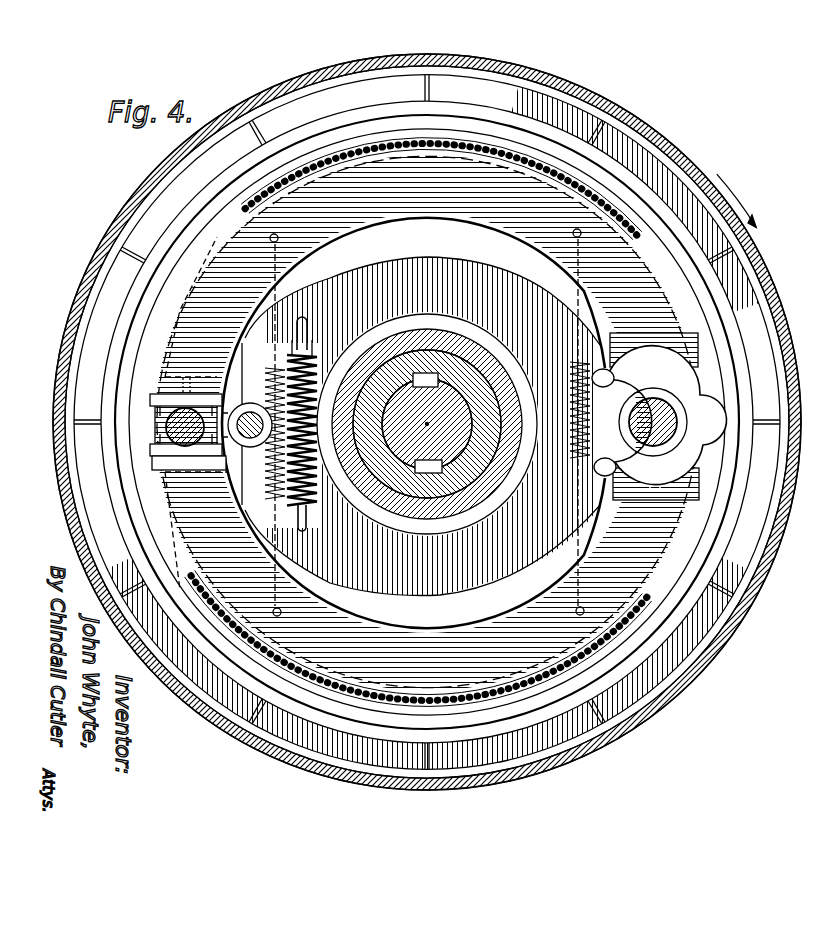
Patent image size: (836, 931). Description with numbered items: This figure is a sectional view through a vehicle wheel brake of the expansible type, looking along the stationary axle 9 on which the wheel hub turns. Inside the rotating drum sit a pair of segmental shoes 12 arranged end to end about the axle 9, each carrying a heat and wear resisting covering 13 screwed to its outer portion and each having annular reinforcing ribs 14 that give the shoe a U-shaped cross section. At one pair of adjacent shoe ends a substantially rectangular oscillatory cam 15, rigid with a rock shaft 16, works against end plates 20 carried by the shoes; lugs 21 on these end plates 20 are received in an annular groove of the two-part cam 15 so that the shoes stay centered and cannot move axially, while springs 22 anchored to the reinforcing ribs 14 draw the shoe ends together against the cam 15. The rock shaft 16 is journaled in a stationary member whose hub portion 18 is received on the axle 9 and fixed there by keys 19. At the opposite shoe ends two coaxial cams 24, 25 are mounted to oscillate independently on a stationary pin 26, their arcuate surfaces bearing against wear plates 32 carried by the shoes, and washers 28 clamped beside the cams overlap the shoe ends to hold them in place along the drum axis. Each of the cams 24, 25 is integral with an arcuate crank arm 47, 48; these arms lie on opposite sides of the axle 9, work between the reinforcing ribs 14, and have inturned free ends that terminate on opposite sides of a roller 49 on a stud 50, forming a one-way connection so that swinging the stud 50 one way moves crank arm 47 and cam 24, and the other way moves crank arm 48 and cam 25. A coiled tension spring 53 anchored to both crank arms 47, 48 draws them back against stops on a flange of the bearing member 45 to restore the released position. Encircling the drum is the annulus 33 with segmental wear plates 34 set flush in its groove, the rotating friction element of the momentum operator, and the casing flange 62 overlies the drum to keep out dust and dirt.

The axle 9 is at (424, 426).
The shoes 12 is at (476, 178).
The covering 13 is at (668, 240).
The reinforcing ribs 14 is at (427, 423).
The oscillatory cam 15 is at (150, 418).
The rock shaft 16 is at (172, 428).
The hub portion 18 is at (424, 422).
The keys 19 is at (437, 412).
The end plates 20 is at (160, 400).
The lugs 21 is at (195, 396).
The springs 22 is at (592, 355).
The cam 24 is at (699, 379).
The cam 25 is at (612, 377).
The stationary pin 26 is at (668, 411).
The washers 28 is at (704, 422).
The plates 32 is at (697, 350).
The annulus 33 is at (684, 677).
The segmental plates 34 is at (605, 725).
The bearing member 45 is at (451, 341).
The crank arm 47 is at (478, 592).
The crank arm 48 is at (452, 272).
The roller 49 is at (228, 462).
The stud 50 is at (245, 447).
The coiled tension spring 53 is at (305, 318).
The flange 62 is at (592, 188).